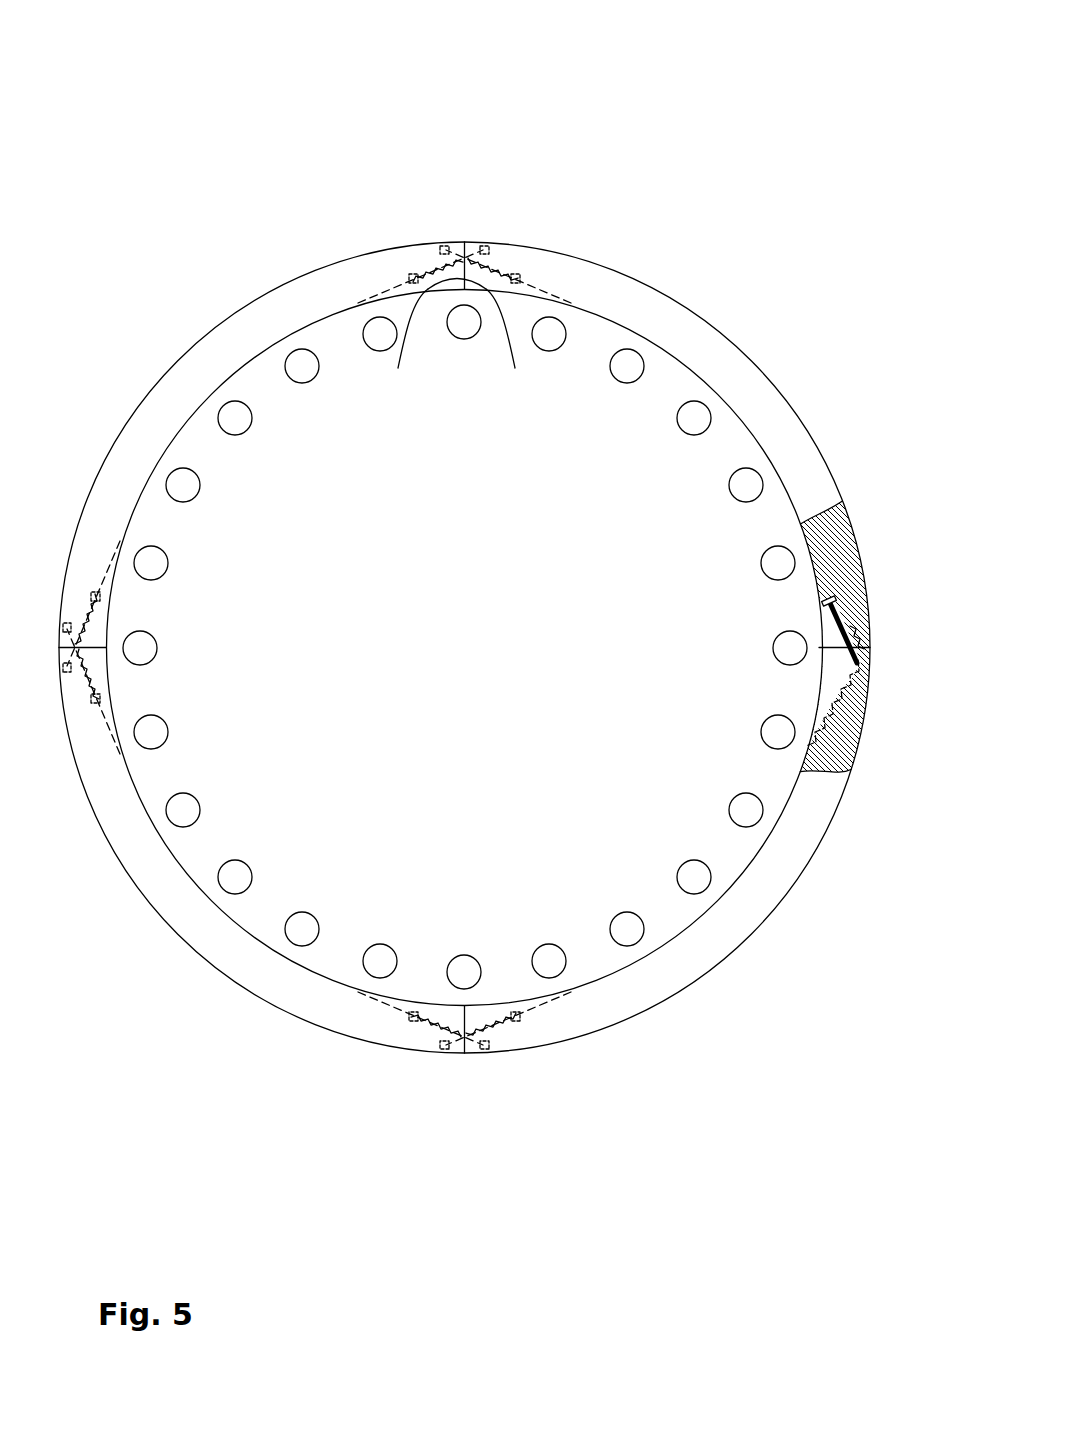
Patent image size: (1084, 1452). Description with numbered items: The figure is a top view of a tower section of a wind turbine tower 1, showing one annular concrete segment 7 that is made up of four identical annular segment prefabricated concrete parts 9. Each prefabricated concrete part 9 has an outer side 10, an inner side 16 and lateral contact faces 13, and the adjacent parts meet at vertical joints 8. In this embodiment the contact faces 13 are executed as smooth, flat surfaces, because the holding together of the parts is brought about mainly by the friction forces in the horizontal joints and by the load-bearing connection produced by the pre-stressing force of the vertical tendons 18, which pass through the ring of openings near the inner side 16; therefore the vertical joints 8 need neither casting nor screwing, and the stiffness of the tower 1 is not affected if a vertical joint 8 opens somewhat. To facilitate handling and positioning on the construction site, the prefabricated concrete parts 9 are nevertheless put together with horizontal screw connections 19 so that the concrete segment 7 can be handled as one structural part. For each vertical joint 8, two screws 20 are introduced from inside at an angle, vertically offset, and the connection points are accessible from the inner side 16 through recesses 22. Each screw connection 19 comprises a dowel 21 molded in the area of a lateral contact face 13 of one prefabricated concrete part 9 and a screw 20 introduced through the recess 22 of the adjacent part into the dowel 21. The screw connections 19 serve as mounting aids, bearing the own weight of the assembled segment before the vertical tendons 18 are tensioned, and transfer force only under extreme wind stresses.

The tower 1 is at (248, 157).
The concrete segment 7 is at (775, 367).
The vertical joint 8 is at (463, 257).
The prefabricated concrete part 9 is at (262, 317).
The outer side 10 is at (612, 270).
The contact face 13 is at (451, 351).
The inner side 16 is at (612, 323).
The vertical tendon 18 is at (230, 878).
The horizontal screw connection 19 is at (820, 663).
The screw 20 is at (823, 602).
The dowel 21 is at (865, 682).
The recess 22 is at (827, 585).